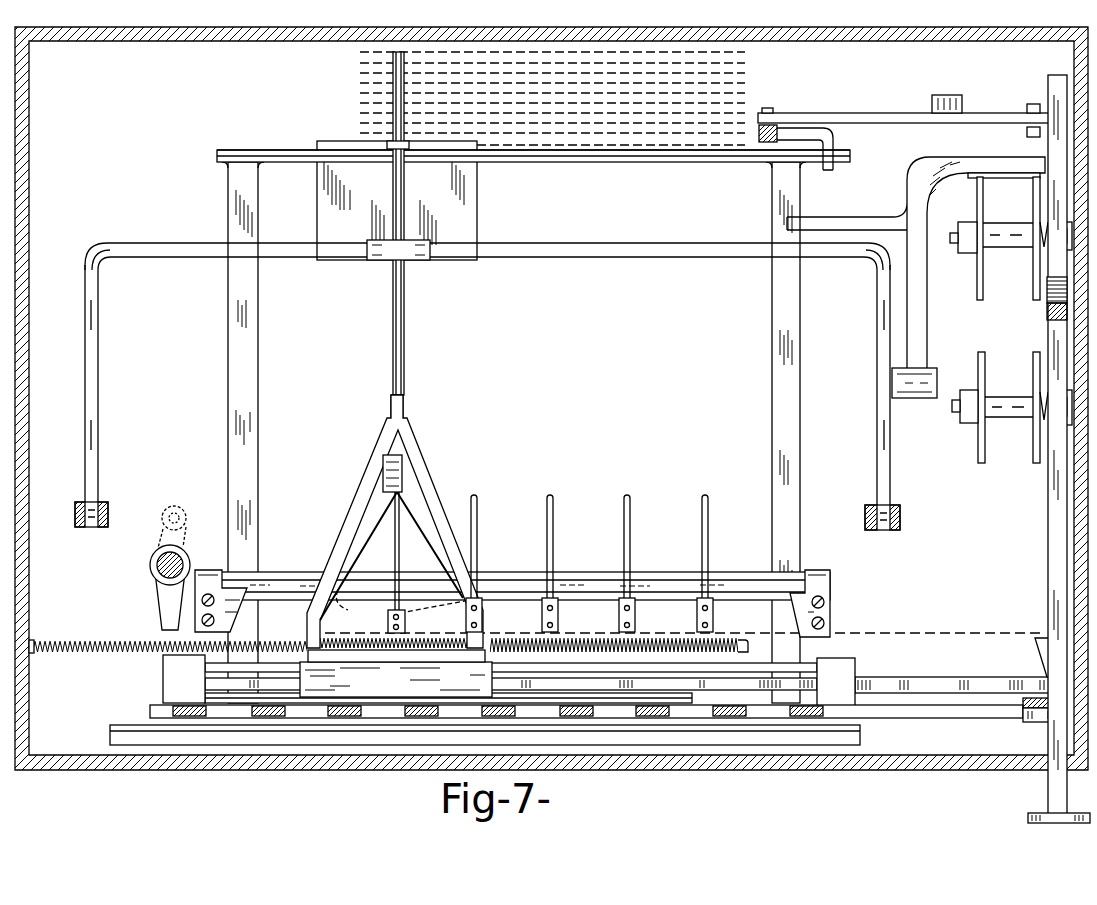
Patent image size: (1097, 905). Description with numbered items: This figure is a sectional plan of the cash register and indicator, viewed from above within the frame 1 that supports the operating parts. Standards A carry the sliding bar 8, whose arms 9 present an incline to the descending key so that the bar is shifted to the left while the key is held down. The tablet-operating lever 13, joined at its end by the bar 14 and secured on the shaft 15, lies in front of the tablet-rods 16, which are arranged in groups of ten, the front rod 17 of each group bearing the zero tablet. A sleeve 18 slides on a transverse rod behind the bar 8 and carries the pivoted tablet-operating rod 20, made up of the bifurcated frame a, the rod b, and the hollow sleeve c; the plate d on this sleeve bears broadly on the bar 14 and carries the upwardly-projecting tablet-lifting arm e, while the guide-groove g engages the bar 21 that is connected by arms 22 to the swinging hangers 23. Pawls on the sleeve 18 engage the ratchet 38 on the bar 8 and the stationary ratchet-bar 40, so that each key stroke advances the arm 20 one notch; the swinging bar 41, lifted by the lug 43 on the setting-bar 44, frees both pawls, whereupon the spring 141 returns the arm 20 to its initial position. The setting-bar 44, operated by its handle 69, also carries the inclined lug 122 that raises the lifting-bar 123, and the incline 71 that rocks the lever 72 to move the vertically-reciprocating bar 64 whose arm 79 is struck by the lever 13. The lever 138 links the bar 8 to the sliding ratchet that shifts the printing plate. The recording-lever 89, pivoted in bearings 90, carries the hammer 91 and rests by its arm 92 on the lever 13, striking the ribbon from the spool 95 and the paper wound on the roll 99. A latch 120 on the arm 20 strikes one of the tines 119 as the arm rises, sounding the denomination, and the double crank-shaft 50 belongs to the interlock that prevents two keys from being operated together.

The frame 1 is at (31, 175).
The sliding bar 8 is at (888, 716).
The arms 9 is at (268, 717).
The tablet-operating lever 13 is at (514, 432).
The bar 14 is at (618, 162).
The shaft 15 is at (575, 581).
The tablet-rods 16 is at (725, 96).
The front rod 17 is at (553, 148).
The sleeve 18 is at (396, 667).
The tablet-operating rod 20 is at (377, 480).
The bar 21 is at (537, 259).
The arms 22 is at (100, 418).
The swinging hangers 23 is at (108, 518).
The ratchet-bar 38 is at (592, 692).
The stationary ratchet-bar 40 is at (632, 670).
The swinging bar 41 is at (918, 684).
The cam or lug 43 is at (1042, 647).
The setting-bar 44 is at (1048, 578).
The double crank-shaft 50 is at (152, 562).
The vertically-reciprocating bar 64 is at (767, 141).
The handle 69 is at (1040, 813).
The inclined lug 71 is at (1053, 137).
The lever 72 is at (987, 115).
The arm 79 is at (828, 152).
The recording-lever 89 is at (926, 330).
The bearings 90 is at (930, 376).
The hammer or head 91 is at (994, 162).
The arm 92 is at (848, 222).
The spool 95 is at (984, 441).
The roll 99 is at (982, 228).
The bells or musical tines 119 is at (478, 534).
The latch 120 is at (399, 481).
The inclined lug 122 is at (1048, 288).
The lifting-bar 123 is at (1047, 313).
The lever 138 is at (1024, 707).
The spring 141 is at (127, 639).
The bifurcated frame a is at (456, 494).
The rod b is at (432, 412).
The hollow sleeve c is at (435, 335).
The plate d is at (496, 234).
The tablet-lifting arm e is at (365, 157).
The guide groove or bearing g is at (368, 274).
The standards A is at (866, 663).